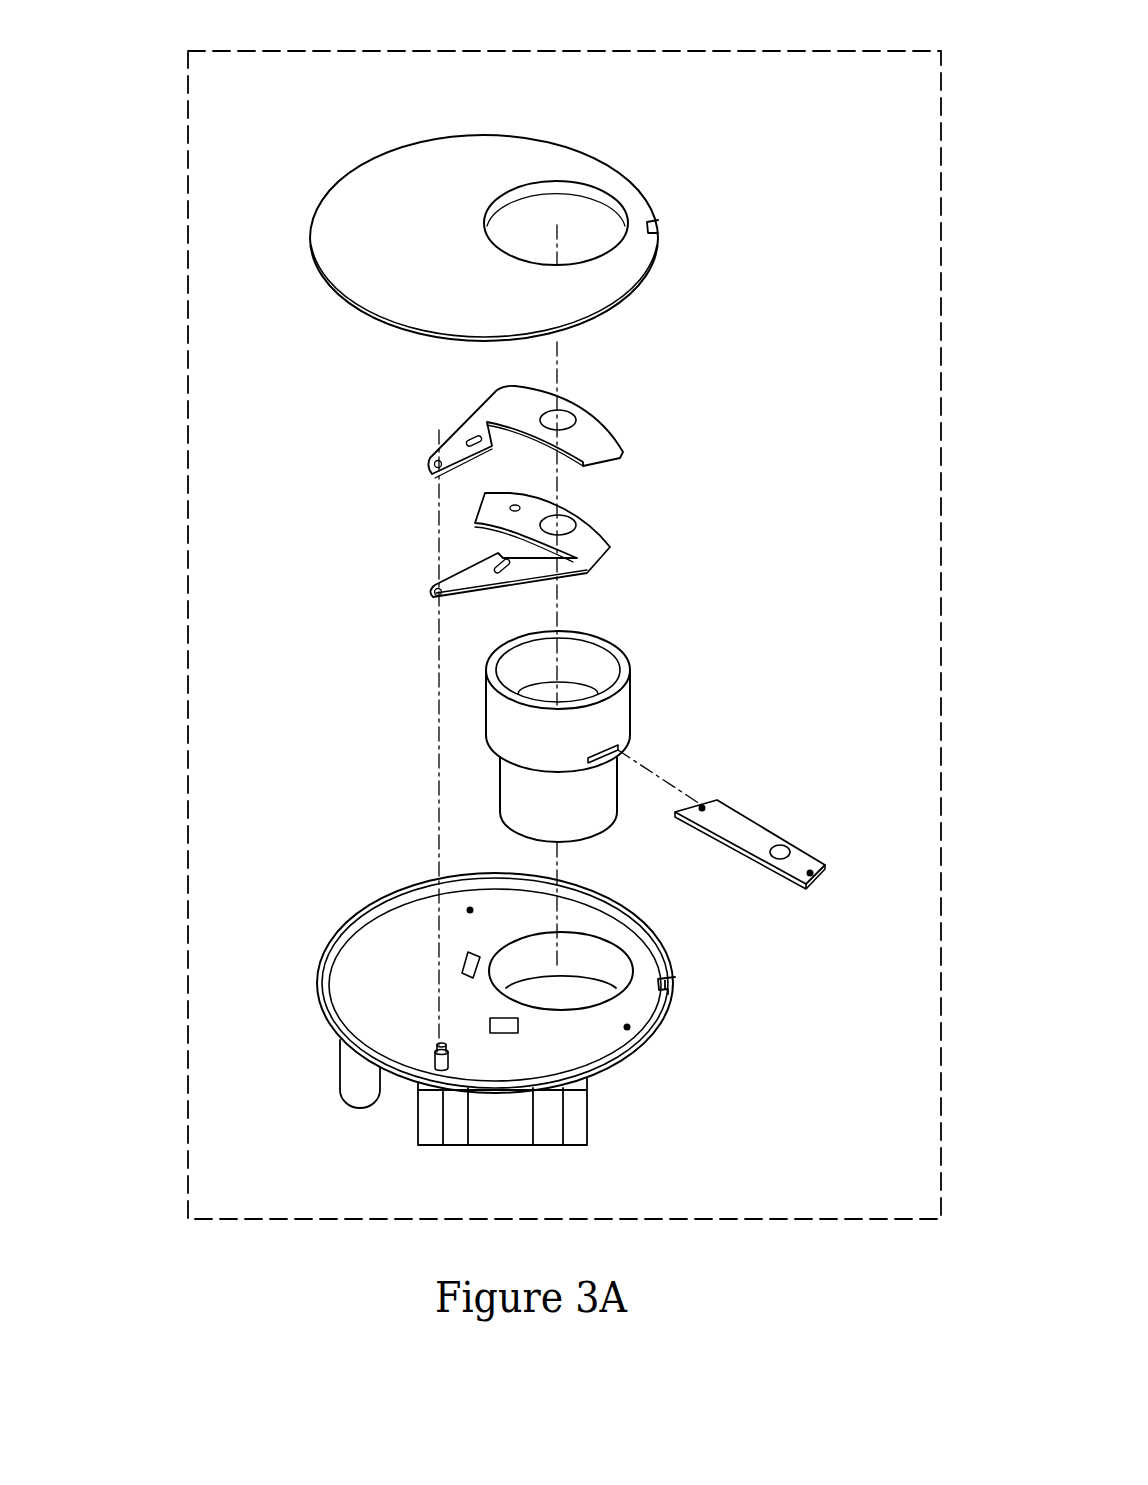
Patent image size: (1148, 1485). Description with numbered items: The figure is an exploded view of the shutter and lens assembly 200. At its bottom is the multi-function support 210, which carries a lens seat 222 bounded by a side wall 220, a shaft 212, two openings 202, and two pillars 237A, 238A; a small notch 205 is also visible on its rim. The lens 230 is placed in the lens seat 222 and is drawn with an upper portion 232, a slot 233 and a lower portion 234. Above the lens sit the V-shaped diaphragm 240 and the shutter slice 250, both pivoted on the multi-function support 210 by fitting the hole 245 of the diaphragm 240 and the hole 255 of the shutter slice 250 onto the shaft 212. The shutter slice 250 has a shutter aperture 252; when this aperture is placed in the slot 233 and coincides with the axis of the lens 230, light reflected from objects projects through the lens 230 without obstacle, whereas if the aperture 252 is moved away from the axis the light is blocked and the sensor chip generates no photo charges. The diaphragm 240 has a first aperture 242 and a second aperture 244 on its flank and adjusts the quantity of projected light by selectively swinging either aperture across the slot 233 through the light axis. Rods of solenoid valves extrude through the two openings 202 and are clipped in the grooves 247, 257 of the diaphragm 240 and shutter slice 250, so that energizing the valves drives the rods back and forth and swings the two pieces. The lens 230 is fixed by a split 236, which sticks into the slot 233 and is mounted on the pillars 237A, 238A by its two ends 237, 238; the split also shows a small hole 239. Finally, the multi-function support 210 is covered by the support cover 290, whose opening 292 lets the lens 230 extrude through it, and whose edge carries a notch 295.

The shutter and lens assembly 200 is at (187, 668).
The support cover 290 is at (523, 214).
The opening 292 is at (528, 212).
The notch in cover 295 is at (660, 233).
The shutter slice 250 is at (544, 418).
The shutter aperture 252 is at (558, 420).
The hole 255 is at (437, 462).
The groove 257 is at (470, 437).
The V-shaped diaphragm 240 is at (529, 542).
The first aperture 242 is at (563, 519).
The second aperture 244 is at (514, 506).
The hole 245 is at (436, 590).
The groove 247 is at (510, 568).
The lens 230 is at (602, 740).
The upper portion of hub 232 is at (623, 717).
The slot 233 is at (619, 748).
The lower portion of hub 234 is at (598, 818).
The split 236 is at (786, 824).
The end 237 is at (703, 806).
The end 238 is at (812, 873).
The hole in contact plate 239 is at (781, 849).
The multi-function support 210 is at (515, 1017).
The side wall 220 is at (608, 960).
The lens seat 222 is at (568, 985).
The notch in base rim 205 is at (672, 983).
The openings 202 is at (462, 962).
The shaft 212 is at (437, 1063).
The pillar 237A is at (470, 908).
The pillar 238A is at (628, 1028).